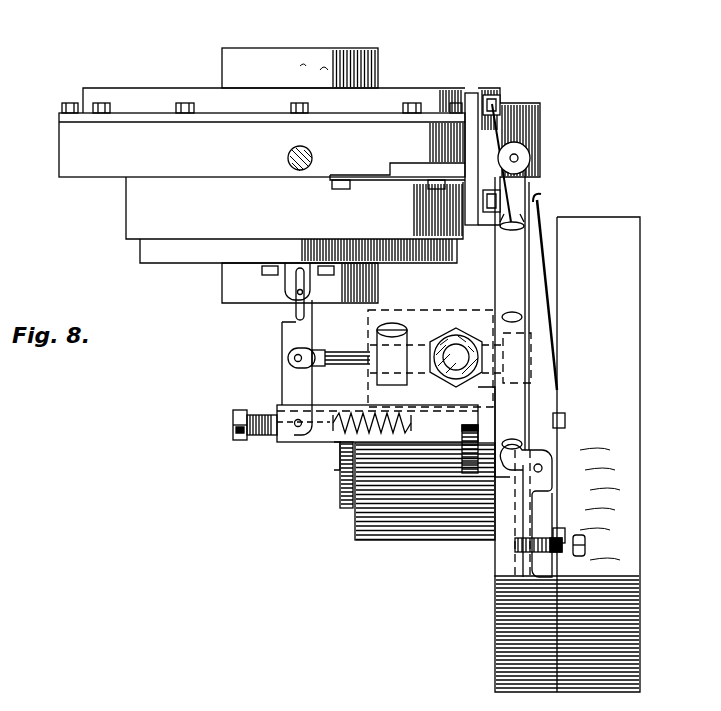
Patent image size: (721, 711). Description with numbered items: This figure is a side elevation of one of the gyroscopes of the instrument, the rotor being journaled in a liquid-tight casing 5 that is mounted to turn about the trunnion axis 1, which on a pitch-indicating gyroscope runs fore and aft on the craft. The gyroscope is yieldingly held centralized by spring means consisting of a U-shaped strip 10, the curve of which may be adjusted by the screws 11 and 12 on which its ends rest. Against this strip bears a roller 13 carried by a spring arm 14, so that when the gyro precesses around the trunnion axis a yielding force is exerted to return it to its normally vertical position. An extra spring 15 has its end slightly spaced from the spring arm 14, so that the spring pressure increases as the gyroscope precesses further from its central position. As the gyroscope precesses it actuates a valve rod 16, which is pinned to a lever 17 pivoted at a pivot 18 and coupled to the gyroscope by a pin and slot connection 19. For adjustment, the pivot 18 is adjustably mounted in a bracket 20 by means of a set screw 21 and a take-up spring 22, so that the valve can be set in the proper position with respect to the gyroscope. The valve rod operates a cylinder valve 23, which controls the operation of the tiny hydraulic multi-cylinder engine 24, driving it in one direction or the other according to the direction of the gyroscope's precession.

The trunnion axis 1 is at (262, 195).
The gyroscope casing 5 is at (264, 55).
The U-shaped strip 10 is at (540, 118).
The adjusting screw 11 is at (492, 100).
The adjusting screw 12 is at (503, 226).
The roller 13 is at (531, 156).
The spring arm 14 is at (523, 276).
The extra spring 15 is at (546, 207).
The valve rod 16 is at (348, 360).
The lever 17 is at (296, 382).
The pivot 18 is at (297, 430).
The pin and slot connection 19 is at (286, 298).
The bracket 20 is at (322, 445).
The set screw 21 is at (234, 438).
The take-up spring 22 is at (366, 414).
The cylinder valve 23 is at (393, 328).
The hydraulic multi-cylinder engine 24 is at (584, 454).